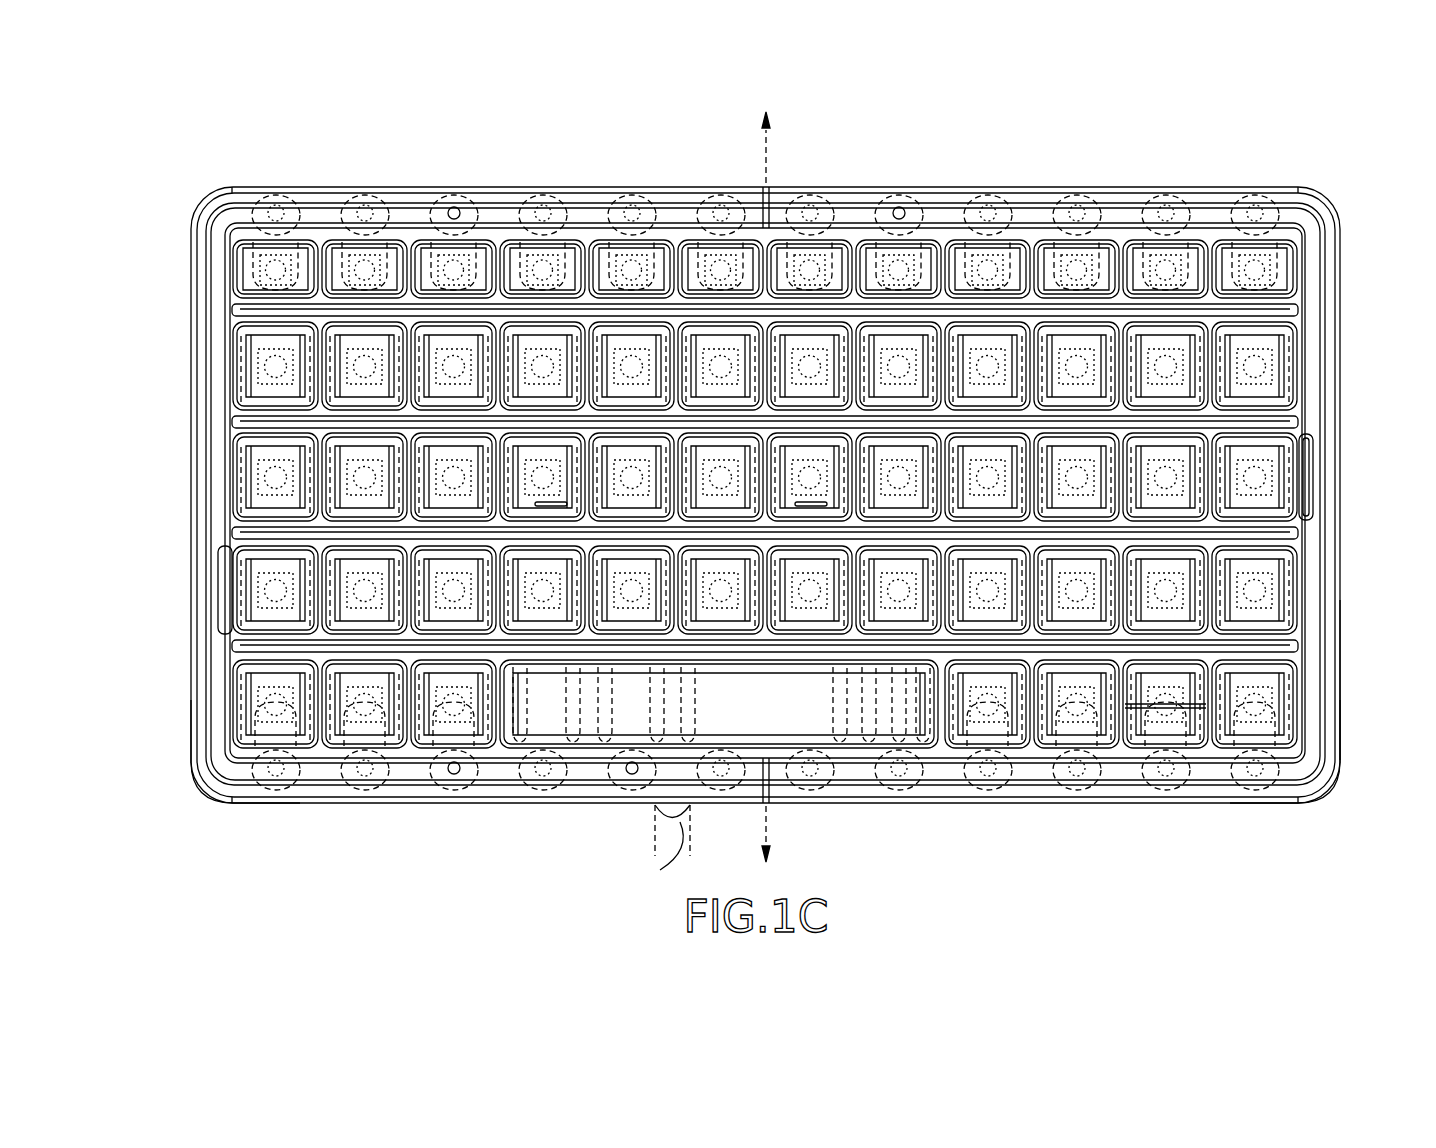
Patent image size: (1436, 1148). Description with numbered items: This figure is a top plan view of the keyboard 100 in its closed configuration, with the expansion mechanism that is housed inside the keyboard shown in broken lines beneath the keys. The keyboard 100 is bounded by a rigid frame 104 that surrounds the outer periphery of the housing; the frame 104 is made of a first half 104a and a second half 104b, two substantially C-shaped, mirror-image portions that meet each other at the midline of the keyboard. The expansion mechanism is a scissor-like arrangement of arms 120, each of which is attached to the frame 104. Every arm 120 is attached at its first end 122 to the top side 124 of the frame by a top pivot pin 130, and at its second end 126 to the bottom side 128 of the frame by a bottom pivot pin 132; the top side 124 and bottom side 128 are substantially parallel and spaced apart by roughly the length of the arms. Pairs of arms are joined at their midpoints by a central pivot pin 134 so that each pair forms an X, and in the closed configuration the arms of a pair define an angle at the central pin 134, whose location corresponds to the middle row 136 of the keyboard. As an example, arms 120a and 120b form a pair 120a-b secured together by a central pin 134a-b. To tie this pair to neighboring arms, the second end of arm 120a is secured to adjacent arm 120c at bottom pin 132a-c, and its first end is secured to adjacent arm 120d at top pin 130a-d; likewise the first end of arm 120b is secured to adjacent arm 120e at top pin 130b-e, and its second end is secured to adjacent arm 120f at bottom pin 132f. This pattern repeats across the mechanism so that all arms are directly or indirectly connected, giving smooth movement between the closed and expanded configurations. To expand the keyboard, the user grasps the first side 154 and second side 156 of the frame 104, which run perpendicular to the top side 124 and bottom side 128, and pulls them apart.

The keyboard 100 is at (772, 480).
The frame 104 is at (510, 186).
The first half 104a is at (228, 797).
The second half 104b is at (1312, 797).
The arms 120 is at (520, 780).
The arm 120a is at (1000, 195).
The arm 120b is at (938, 197).
The adjacent arm 120c is at (838, 752).
The adjacent arm 120d is at (1010, 196).
The adjacent arm 120e is at (840, 197).
The adjacent arm 120f is at (1040, 770).
The pair of arms 120a-b is at (905, 765).
The first end 122 is at (1200, 195).
The top side 124 is at (1155, 190).
The second end 126 is at (1208, 776).
The bottom side 128 is at (1146, 796).
The top pivot pin 130 is at (440, 186).
The top pin 130a-d is at (1005, 187).
The top pin 130b-e is at (900, 186).
The bottom pivot pin 132 is at (455, 778).
The bottom pin 132f is at (1003, 777).
The bottom pin 132a-c is at (935, 805).
The central pivot pin 134 is at (245, 479).
The central pin 134a-b is at (935, 478).
The middle row 136 is at (1328, 435).
The first side 154 is at (197, 615).
The second side 156 is at (1335, 713).